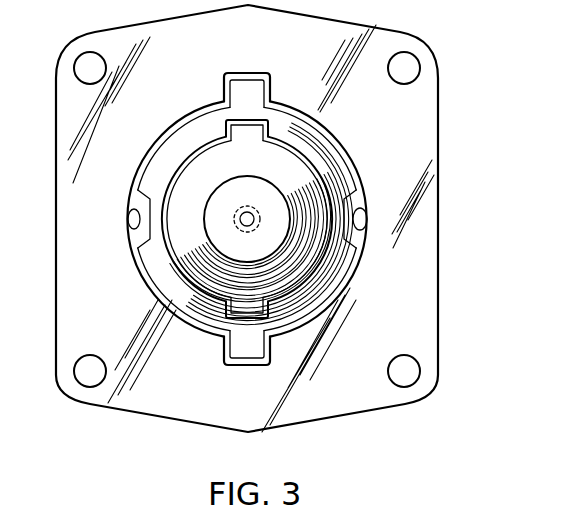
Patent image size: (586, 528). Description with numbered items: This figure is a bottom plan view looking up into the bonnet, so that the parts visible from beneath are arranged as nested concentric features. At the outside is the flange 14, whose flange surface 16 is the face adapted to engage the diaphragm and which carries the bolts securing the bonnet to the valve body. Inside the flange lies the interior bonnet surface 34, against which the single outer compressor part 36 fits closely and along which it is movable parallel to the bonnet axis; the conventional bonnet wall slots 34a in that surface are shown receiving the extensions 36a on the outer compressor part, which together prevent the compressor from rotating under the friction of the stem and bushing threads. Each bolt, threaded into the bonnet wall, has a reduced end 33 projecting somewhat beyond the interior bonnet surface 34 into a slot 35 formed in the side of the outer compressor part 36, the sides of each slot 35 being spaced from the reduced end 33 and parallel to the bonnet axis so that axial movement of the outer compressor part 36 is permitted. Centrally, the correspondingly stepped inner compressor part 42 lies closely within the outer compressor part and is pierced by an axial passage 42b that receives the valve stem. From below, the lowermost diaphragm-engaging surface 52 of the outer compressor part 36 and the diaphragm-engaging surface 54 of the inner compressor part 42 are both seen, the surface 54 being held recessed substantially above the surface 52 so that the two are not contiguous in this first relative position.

The flange 14 is at (440, 257).
The flange surface 16 is at (386, 297).
The reduced end 33 is at (363, 222).
The interior bonnet surface 34 is at (318, 133).
The bonnet wall slots 34a is at (228, 397).
The slot 35 is at (357, 196).
The outer compressor part 36 is at (206, 313).
The extensions 36a is at (242, 354).
The inner compressor part 42 is at (185, 195).
The axial passage 42b is at (250, 217).
The diaphragm-engaging surface 52 is at (182, 142).
The diaphragm-engaging surface 54 is at (192, 254).